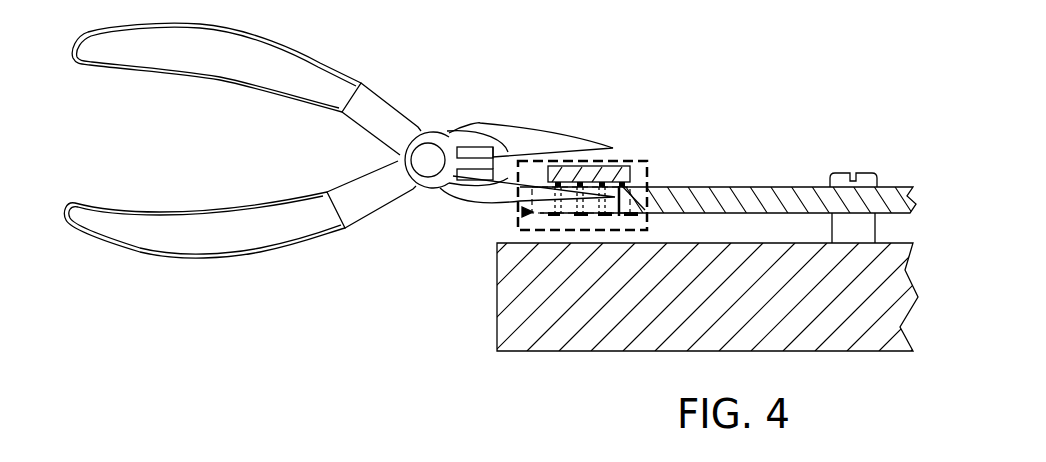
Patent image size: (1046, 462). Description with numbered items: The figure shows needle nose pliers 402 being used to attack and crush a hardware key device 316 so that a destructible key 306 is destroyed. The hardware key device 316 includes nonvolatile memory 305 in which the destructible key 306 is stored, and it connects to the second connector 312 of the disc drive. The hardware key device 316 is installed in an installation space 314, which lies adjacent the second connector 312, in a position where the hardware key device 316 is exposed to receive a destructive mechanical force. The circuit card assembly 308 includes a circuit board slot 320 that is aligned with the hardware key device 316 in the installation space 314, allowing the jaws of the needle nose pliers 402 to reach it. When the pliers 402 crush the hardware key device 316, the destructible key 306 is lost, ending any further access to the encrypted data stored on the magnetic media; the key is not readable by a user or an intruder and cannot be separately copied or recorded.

The needle nose pliers 402 is at (343, 73).
The nonvolatile memory 305 is at (696, 135).
The destructible key 306 is at (696, 135).
The hardware key device 316 is at (624, 167).
The installation space 314 is at (650, 178).
The circuit card assembly 308 is at (695, 187).
The second connector 312 is at (523, 224).
The circuit board slot 320 is at (522, 212).